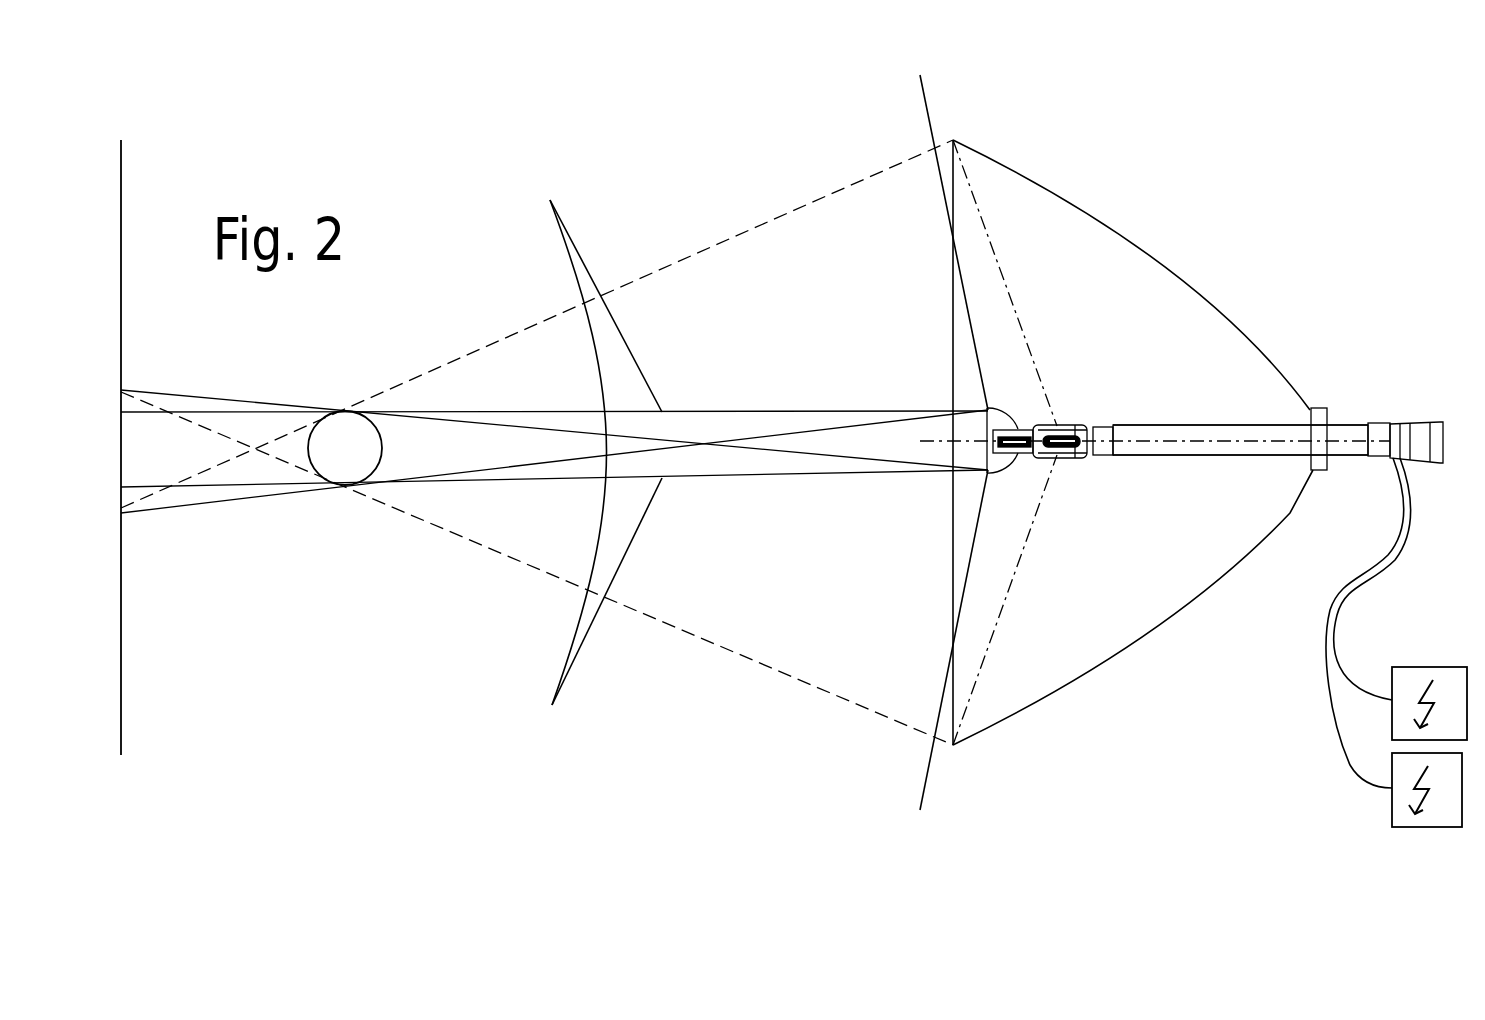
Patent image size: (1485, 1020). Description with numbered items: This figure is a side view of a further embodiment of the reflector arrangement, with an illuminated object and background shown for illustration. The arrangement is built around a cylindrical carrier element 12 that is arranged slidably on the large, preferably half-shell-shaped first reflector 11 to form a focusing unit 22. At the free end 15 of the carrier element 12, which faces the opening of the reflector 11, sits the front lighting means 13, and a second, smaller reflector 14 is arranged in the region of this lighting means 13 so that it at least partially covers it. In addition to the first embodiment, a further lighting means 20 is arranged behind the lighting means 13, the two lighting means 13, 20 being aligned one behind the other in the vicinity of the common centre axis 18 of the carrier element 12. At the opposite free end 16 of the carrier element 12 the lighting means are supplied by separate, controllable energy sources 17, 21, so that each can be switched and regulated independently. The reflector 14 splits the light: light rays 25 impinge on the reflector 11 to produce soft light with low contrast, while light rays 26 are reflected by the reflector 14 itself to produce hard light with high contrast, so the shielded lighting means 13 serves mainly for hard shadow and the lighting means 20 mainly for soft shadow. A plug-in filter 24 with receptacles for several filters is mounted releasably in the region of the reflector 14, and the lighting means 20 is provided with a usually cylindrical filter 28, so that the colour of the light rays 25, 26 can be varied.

The first reflector 11 is at (1313, 470).
The carrier element 12 is at (1333, 462).
The lighting means 13 is at (1008, 453).
The second reflector 14 is at (1010, 412).
The free end 15 is at (1093, 427).
The free end 16 is at (1367, 423).
The energy source 17 is at (1392, 723).
The centre axis 18 is at (1207, 456).
The further lighting means 20 is at (1060, 455).
The energy source 21 is at (1392, 808).
The focusing unit 22 is at (1176, 456).
The plug-in filter 24 is at (988, 410).
The light rays 25 is at (535, 325).
The light rays 26 is at (548, 197).
The cylindrical filter 28 is at (1057, 430).